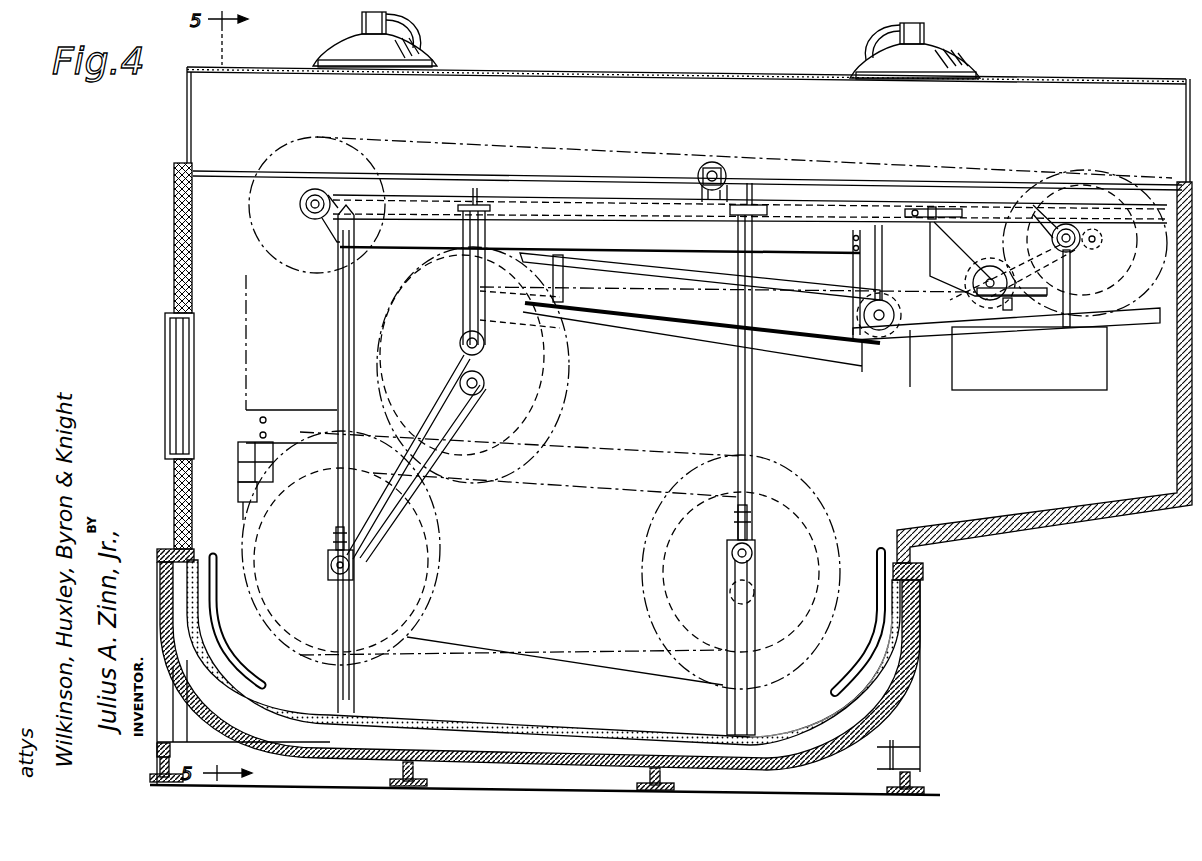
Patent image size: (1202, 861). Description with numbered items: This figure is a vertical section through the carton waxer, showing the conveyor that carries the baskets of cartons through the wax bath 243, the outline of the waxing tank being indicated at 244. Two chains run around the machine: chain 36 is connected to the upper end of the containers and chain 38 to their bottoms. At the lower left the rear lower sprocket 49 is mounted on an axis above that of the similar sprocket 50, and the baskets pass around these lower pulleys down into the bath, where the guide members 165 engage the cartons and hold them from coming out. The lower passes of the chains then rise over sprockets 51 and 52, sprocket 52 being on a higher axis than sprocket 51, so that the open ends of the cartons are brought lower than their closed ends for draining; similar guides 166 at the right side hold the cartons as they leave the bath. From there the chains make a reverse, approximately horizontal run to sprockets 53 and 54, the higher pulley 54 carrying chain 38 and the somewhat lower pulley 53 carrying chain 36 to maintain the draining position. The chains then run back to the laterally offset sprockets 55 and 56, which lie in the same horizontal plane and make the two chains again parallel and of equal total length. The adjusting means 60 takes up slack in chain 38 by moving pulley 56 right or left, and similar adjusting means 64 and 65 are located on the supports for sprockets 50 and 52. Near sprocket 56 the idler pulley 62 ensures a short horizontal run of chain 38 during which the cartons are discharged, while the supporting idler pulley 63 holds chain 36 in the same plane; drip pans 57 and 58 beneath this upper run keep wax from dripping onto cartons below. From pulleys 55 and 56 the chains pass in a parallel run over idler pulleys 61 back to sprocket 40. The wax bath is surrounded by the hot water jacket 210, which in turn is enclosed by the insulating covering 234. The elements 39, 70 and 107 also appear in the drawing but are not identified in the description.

The chain 36 is at (665, 300).
The chain 38 is at (655, 456).
The support strut 39 is at (598, 262).
The sprocket 40 is at (292, 148).
The lower sprocket 49 is at (445, 510).
The sprocket 50 is at (440, 586).
The sprocket 51 is at (842, 619).
The sprocket 52 is at (800, 470).
The sprocket 53 is at (575, 410).
The sprocket 54 is at (570, 388).
The sprocket 55 is at (1118, 178).
The sprocket 56 is at (1055, 172).
The drip pan 57 is at (788, 308).
The drip pan 58 is at (653, 270).
The adjusting means 60 is at (938, 210).
The idler pulley 61 is at (715, 164).
The idler pulley 62 is at (985, 266).
The supporting idler pulley 63 is at (890, 322).
The adjusting means 64 is at (325, 535).
The adjusting means 65 is at (735, 522).
The drive belt 70 is at (575, 150).
The roller 107 is at (1075, 282).
The guide member 165 is at (207, 593).
The guide 166 is at (880, 607).
The water jacket 210 is at (905, 621).
The insulating covering 234 is at (883, 722).
The wax bath 243 is at (795, 687).
The waxing tank outline 244 is at (615, 730).